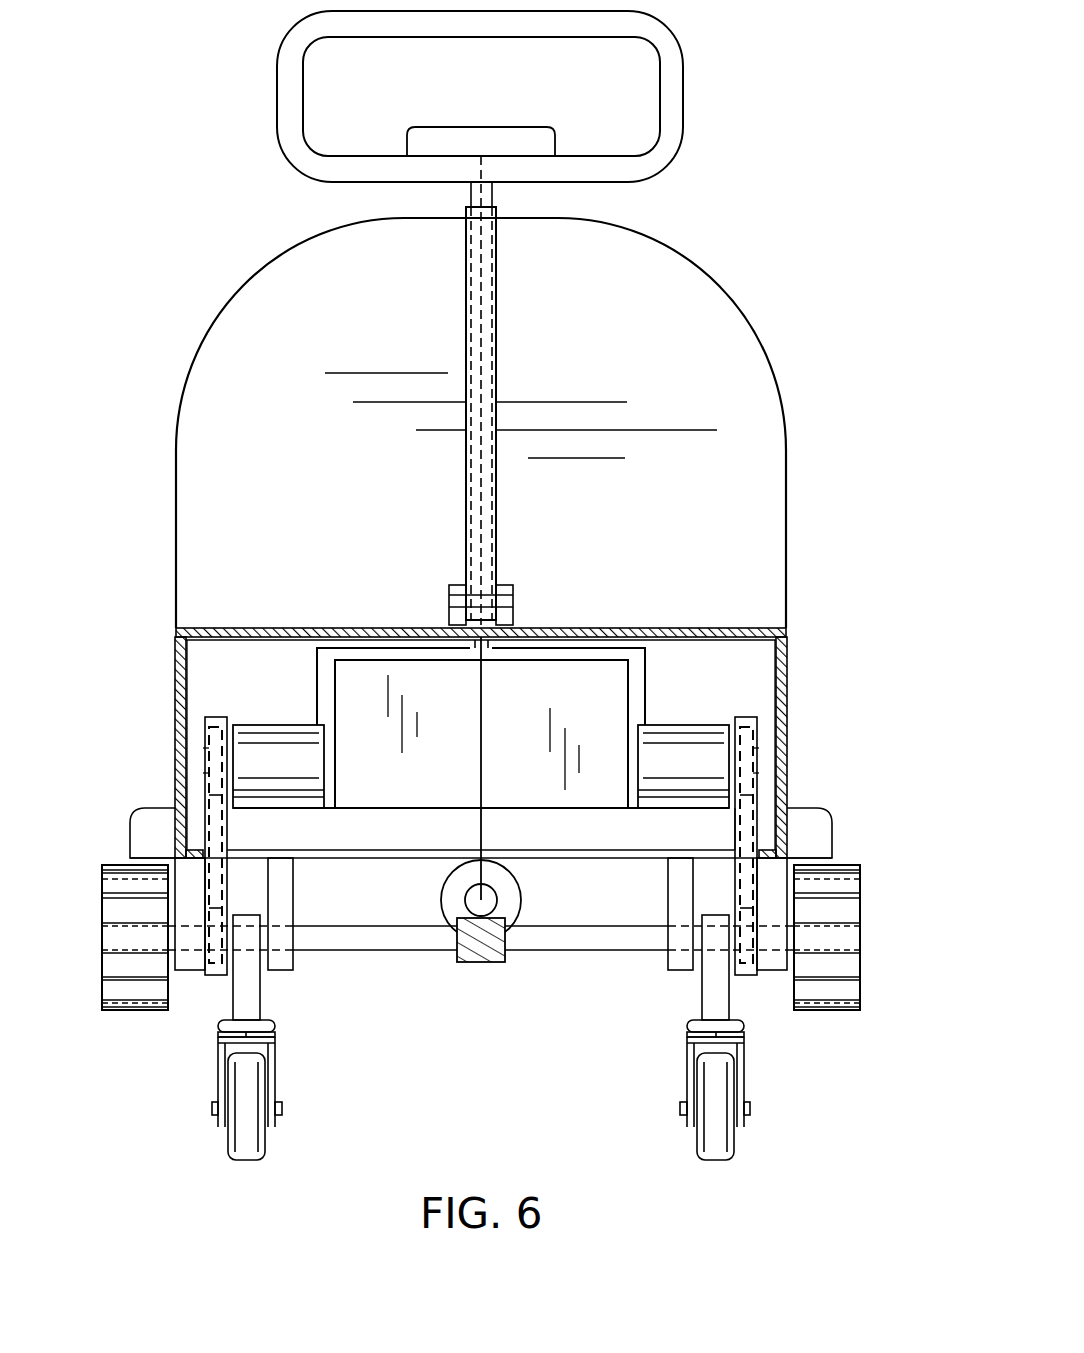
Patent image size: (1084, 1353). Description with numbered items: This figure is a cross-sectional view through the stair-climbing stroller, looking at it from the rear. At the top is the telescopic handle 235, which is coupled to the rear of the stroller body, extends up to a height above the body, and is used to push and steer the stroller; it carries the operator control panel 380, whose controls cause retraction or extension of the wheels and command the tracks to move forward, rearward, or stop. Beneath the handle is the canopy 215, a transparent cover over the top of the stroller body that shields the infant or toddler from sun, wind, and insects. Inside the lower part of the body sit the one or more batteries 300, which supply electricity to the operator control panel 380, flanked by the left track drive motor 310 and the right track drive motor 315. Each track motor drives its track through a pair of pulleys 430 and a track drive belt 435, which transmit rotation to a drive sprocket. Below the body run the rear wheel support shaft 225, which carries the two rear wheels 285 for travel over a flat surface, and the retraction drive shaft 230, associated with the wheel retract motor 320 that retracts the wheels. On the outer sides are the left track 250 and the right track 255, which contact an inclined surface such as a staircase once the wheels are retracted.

The canopy 215 is at (758, 343).
The rear wheel support shaft 225 is at (353, 935).
The retraction drive shaft 230 is at (470, 900).
The telescopic handle 235 is at (672, 163).
The left track 250 is at (137, 997).
The right track 255 is at (848, 992).
The rear wheels 285 is at (232, 1133).
The batteries 300 is at (570, 690).
The left track drive motor 310 is at (260, 757).
The right track drive motor 315 is at (693, 760).
The wheel retract motor 320 is at (508, 903).
The operator control panel 380 is at (525, 132).
The pair of pulleys 430 is at (748, 925).
The track drive belt 435 is at (745, 820).